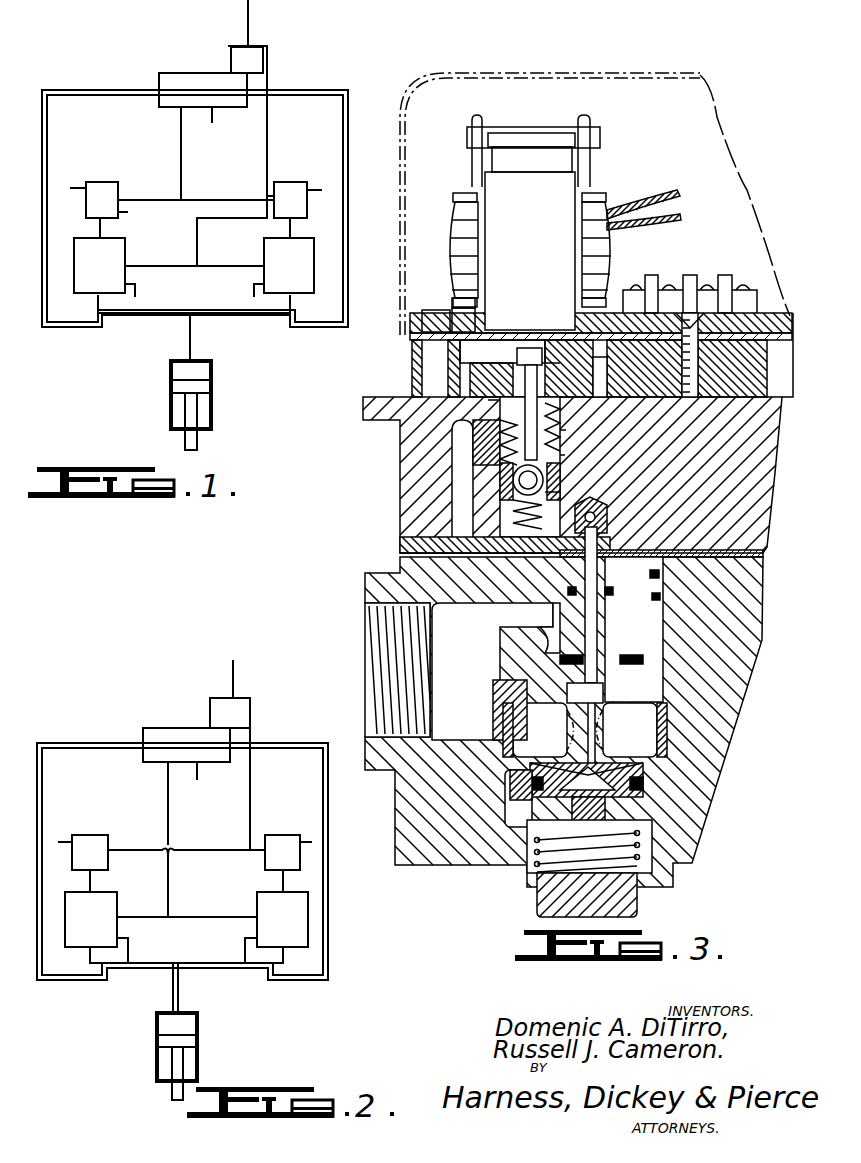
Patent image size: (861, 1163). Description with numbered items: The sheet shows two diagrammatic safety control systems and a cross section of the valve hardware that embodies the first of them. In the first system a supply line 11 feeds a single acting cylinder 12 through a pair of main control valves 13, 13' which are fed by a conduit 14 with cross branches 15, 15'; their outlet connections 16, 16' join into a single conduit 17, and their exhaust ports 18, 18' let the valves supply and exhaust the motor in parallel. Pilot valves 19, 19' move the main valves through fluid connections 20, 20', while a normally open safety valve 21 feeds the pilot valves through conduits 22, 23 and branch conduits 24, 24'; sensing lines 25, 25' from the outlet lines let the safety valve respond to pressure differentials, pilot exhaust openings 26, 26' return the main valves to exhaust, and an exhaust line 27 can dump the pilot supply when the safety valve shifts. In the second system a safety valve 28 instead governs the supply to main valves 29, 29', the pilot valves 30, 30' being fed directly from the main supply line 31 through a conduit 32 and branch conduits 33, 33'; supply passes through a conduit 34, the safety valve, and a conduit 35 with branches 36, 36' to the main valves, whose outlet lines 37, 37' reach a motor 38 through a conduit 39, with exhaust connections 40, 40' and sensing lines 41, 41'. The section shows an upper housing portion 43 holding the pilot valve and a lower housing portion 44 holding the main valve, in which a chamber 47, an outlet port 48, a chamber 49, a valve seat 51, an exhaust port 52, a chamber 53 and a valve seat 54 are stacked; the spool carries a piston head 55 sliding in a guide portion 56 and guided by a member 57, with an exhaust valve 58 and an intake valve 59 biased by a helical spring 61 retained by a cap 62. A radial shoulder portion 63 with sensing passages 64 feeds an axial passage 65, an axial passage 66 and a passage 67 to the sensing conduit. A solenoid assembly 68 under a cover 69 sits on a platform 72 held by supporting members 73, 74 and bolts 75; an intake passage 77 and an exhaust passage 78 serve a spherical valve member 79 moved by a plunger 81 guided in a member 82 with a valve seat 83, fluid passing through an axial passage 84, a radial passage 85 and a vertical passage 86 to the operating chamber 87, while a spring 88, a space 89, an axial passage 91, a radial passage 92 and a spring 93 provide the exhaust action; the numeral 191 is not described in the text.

In FIG. 1, the supply line 11 is at (256, 16).
In FIG. 1, the single acting cylinder 12 is at (213, 380).
In FIG. 1, the main control valve 13 is at (86, 273).
In FIG. 3, the main control valve 13 is at (515, 628).
In FIG. 1, the main control valve 13' is at (303, 265).
In FIG. 1, the conduit 14 is at (272, 66).
In FIG. 1, the cross branch 15 is at (161, 282).
In FIG. 1, the cross branch 15' is at (230, 283).
In FIG. 1, the outlet connection 16 is at (144, 317).
In FIG. 1, the outlet connection 16' is at (240, 315).
In FIG. 1, the conduit 17 is at (192, 346).
In FIG. 1, the exhaust port 18 is at (142, 296).
In FIG. 1, the exhaust port 18' is at (246, 296).
In FIG. 1, the pilot valve 19 is at (141, 219).
In FIG. 1, the pilot valve 19' is at (284, 168).
In FIG. 1, the fluid connection 20 is at (79, 228).
In FIG. 1, the fluid connection 20' is at (313, 226).
In FIG. 1, the safety valve 21 is at (168, 78).
In FIG. 1, the conduit 22 is at (231, 57).
In FIG. 1, the conduit 23 is at (184, 140).
In FIG. 1, the branch conduit 24 is at (216, 229).
In FIG. 1, the branch conduit 24' is at (196, 186).
In FIG. 1, the sensing line 25 is at (176, 208).
In FIG. 1, the sensing line 25' is at (213, 208).
In FIG. 1, the exhaust opening 26 is at (89, 186).
In FIG. 1, the exhaust opening 26' is at (302, 181).
In FIG. 1, the exhaust line 27 is at (213, 117).
In FIG. 2, the safety valve 28 is at (160, 732).
In FIG. 2, the main valve 29 is at (82, 921).
In FIG. 2, the main valve 29' is at (312, 910).
In FIG. 2, the pilot valve 30 is at (83, 835).
In FIG. 2, the pilot valve 30' is at (312, 852).
In FIG. 2, the main supply line 31 is at (236, 675).
In FIG. 2, the conduit 32 is at (253, 790).
In FIG. 2, the branch conduit 33 is at (186, 839).
In FIG. 2, the branch conduit 33' is at (272, 825).
In FIG. 2, the conduit 34 is at (205, 708).
In FIG. 2, the conduit 35 is at (167, 792).
In FIG. 2, the branch 36 is at (143, 903).
In FIG. 2, the branch 36' is at (213, 929).
In FIG. 2, the outlet line 37 is at (132, 974).
In FIG. 2, the outlet line 37' is at (229, 971).
In FIG. 2, the motor 38 is at (200, 1035).
In FIG. 2, the conduit 39 is at (172, 997).
In FIG. 2, the exhaust connection 40 is at (137, 950).
In FIG. 2, the exhaust connection 40' is at (231, 950).
In FIG. 2, the sensing line 41 is at (182, 861).
In FIG. 2, the sensing line 41' is at (204, 861).
In FIG. 3, the upper housing portion 43 is at (400, 487).
In FIG. 3, the lower housing portion 44 is at (395, 836).
In FIG. 3, the chamber 47 is at (520, 828).
In FIG. 3, the outlet port 48 is at (640, 738).
In FIG. 3, the chamber 49 is at (642, 721).
In FIG. 3, the valve seat 51 is at (520, 790).
In FIG. 3, the exhaust port 52 is at (365, 633).
In FIG. 3, the chamber 53 is at (495, 668).
In FIG. 3, the valve seat 54 is at (542, 705).
In FIG. 3, the actuating piston head 55 is at (655, 552).
In FIG. 3, the guide portion 56 is at (660, 600).
In FIG. 3, the downwardly extending member 57 is at (615, 560).
In FIG. 3, the exhaust valve 58 is at (650, 657).
In FIG. 3, the intake valve 59 is at (645, 790).
In FIG. 3, the helical spring 61 is at (640, 818).
In FIG. 3, the removable cap 62 is at (672, 884).
In FIG. 3, the radial shoulder portion 63 is at (615, 758).
In FIG. 3, the radial sensing passage 64 is at (642, 768).
In FIG. 3, the axial passage 65 is at (640, 700).
In FIG. 3, the axial passage 66 is at (600, 590).
In FIG. 3, the passage 67 is at (607, 523).
In FIG. 3, the solenoid assembly 68 is at (612, 184).
In FIG. 3, the cover 69 is at (470, 73).
In FIG. 3, the platform 72 is at (624, 312).
In FIG. 3, the supporting member 73 is at (412, 362).
In FIG. 3, the supporting member 74 is at (620, 362).
In FIG. 3, the bolt 75 is at (438, 312).
In FIG. 3, the intake passage 77 is at (545, 482).
In FIG. 3, the exhaust passage 78 is at (518, 362).
In FIG. 3, the spherical valve member 79 is at (560, 494).
In FIG. 3, the plunger 81 is at (565, 412).
In FIG. 3, the guide member 82 is at (600, 388).
In FIG. 3, the valve seat 83 is at (566, 458).
In FIG. 3, the axial passage 84 is at (505, 468).
In FIG. 3, the radial passage 85 is at (465, 436).
In FIG. 3, the vertical passage 86 is at (455, 521).
In FIG. 3, the main valve operating chamber 87 is at (425, 545).
In FIG. 3, the helical spring 88 is at (515, 517).
In FIG. 3, the space 89 is at (520, 488).
In FIG. 3, the axial passage 91 is at (490, 409).
In FIG. 3, the radial passage 92 is at (572, 362).
In FIG. 3, the helical spring 93 is at (500, 449).
In FIG. 3, the spring seat 191 is at (562, 432).